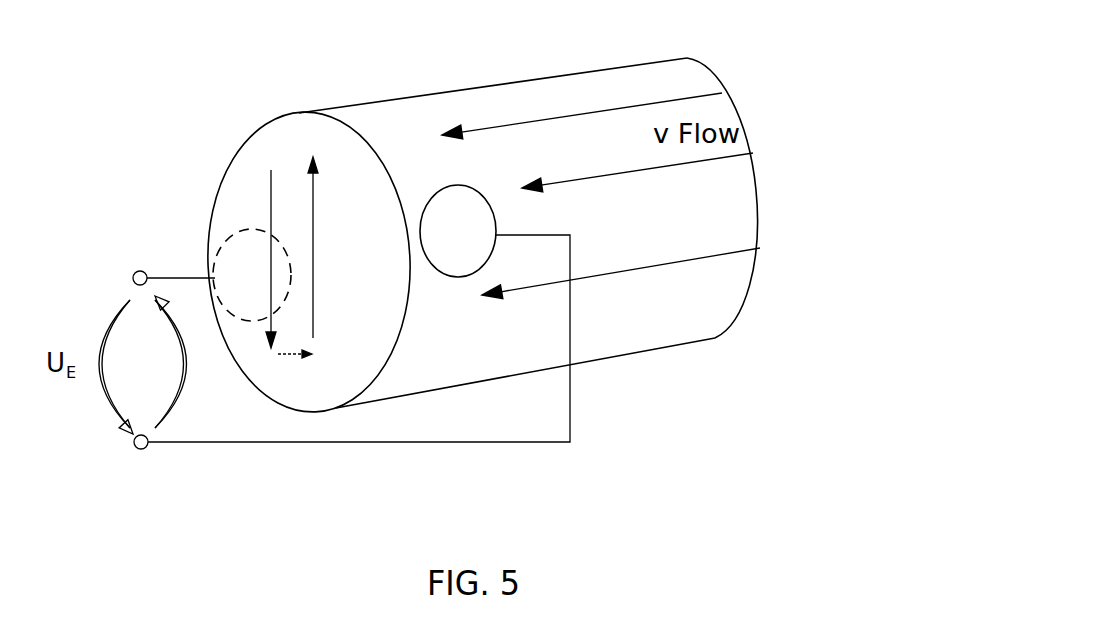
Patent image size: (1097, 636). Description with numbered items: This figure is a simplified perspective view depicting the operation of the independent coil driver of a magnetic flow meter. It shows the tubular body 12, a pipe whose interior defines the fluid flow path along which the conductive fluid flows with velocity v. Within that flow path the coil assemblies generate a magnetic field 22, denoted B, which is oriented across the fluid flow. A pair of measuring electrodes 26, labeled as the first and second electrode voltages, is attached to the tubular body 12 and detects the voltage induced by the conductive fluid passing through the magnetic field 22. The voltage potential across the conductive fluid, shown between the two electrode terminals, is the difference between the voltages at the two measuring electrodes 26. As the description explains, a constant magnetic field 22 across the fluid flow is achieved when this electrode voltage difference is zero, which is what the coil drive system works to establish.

The tubular body 12 is at (352, 98).
The magnetic field 22 is at (317, 372).
The measuring electrodes 26 is at (227, 238).